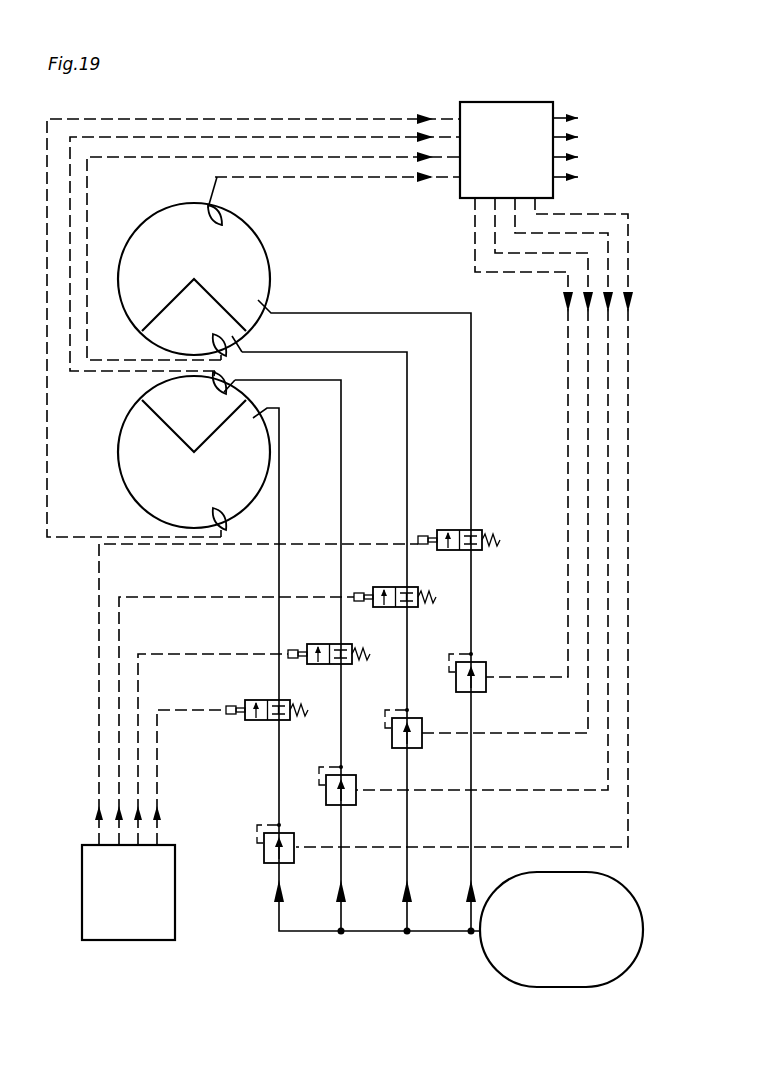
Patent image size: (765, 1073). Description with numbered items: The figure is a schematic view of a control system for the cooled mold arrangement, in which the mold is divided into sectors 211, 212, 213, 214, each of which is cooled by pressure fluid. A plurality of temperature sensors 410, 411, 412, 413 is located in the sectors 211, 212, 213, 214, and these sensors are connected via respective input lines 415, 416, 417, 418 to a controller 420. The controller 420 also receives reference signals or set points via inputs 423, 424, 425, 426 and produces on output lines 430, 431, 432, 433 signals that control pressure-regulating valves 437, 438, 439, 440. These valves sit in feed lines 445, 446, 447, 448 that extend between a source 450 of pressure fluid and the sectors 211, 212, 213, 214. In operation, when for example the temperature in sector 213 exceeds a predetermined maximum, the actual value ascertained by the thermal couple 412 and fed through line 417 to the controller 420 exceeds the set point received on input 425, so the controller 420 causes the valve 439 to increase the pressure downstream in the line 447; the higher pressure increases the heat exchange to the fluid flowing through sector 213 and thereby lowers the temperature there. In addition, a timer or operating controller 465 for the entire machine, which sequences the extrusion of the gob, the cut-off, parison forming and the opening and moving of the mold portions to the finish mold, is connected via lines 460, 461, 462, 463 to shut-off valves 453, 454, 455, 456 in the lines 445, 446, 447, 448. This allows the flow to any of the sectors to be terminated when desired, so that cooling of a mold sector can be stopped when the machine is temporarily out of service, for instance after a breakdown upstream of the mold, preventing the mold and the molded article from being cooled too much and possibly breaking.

The sector 211 is at (210, 429).
The sector 212 is at (210, 494).
The sector 213 is at (210, 326).
The sector 214 is at (210, 256).
The temperature sensor 410 is at (212, 382).
The temperature sensor 411 is at (212, 518).
The temperature sensor 412 is at (213, 338).
The temperature sensor 413 is at (224, 216).
The input line 415 is at (215, 137).
The input line 416 is at (152, 120).
The input line 417 is at (272, 157).
The input line 418 is at (350, 177).
The controller 420 is at (470, 102).
The input 423 is at (576, 116).
The input 424 is at (580, 137).
The input 425 is at (580, 157).
The input 426 is at (580, 177).
The output line 430 is at (627, 326).
The output line 431 is at (608, 364).
The output line 432 is at (588, 402).
The output line 433 is at (568, 446).
The pressure-regulating valve 437 is at (264, 852).
The pressure-regulating valve 438 is at (326, 800).
The pressure-regulating valve 439 is at (392, 742).
The pressure-regulating valve 440 is at (456, 685).
The feed line 445 is at (279, 925).
The feed line 446 is at (341, 925).
The feed line 447 is at (407, 925).
The feed line 448 is at (471, 925).
The source of pressure fluid 450 is at (578, 874).
The shut-off valve 453 is at (247, 720).
The shut-off valve 454 is at (307, 644).
The shut-off valve 455 is at (373, 587).
The shut-off valve 456 is at (437, 532).
The line 460 is at (157, 794).
The line 461 is at (138, 772).
The line 462 is at (119, 752).
The line 463 is at (99, 733).
The operating controller 465 is at (130, 940).